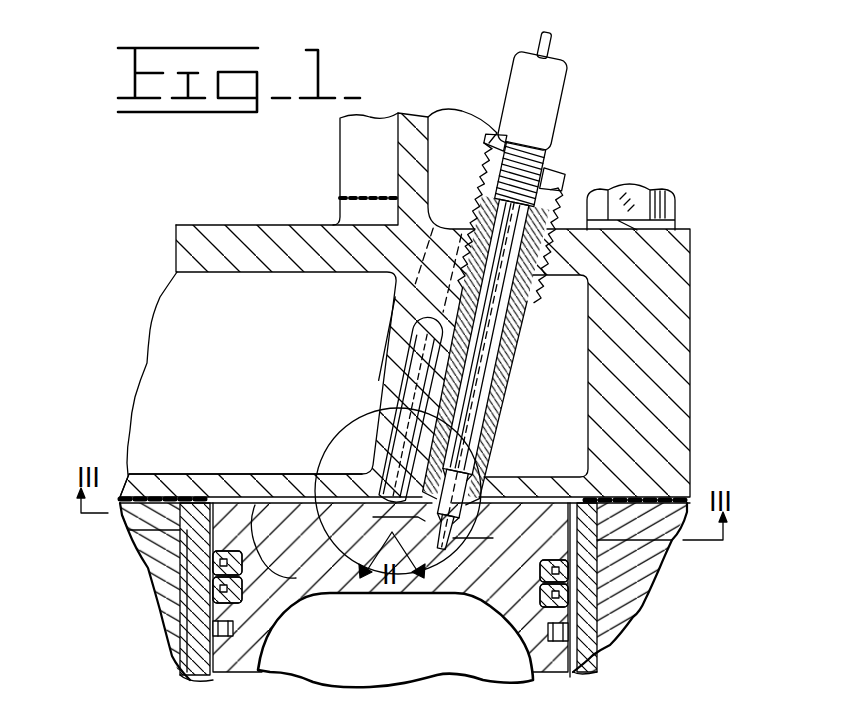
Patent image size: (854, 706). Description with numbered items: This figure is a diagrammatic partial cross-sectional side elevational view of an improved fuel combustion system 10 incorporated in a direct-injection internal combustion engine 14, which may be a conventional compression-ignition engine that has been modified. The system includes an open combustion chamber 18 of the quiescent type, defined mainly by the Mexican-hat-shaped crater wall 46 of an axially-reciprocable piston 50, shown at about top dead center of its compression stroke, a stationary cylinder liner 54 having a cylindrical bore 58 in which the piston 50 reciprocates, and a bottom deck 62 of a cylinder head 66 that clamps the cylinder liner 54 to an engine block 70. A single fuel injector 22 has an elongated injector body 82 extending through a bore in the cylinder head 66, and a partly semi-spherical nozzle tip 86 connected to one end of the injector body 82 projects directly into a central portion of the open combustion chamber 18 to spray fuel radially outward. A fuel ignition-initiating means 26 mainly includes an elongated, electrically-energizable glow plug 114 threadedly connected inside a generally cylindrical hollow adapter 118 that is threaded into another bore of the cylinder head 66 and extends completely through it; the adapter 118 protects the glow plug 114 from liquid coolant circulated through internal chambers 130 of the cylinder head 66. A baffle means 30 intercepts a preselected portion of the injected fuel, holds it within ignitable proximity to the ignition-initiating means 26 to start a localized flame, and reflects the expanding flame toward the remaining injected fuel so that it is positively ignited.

The fuel combustion system 10 is at (326, 434).
The direct-injection internal combustion engine 14 is at (320, 190).
The open combustion chamber 18 is at (304, 541).
The fuel injector 22 is at (400, 344).
The fuel ignition-initiating means 26 is at (514, 352).
The baffle means 30 is at (458, 526).
The crater wall 46 is at (243, 568).
The piston 50 is at (541, 672).
The cylinder liner 54 is at (583, 667).
The cylindrical bore 58 is at (226, 683).
The bottom deck 62 is at (178, 493).
The cylinder head 66 is at (268, 215).
The engine block 70 is at (640, 588).
The injector body 82 is at (404, 382).
The nozzle tip 86 is at (389, 494).
The glow plug 114 is at (490, 370).
The adapter 118 is at (486, 402).
The internal chambers 130 is at (265, 339).